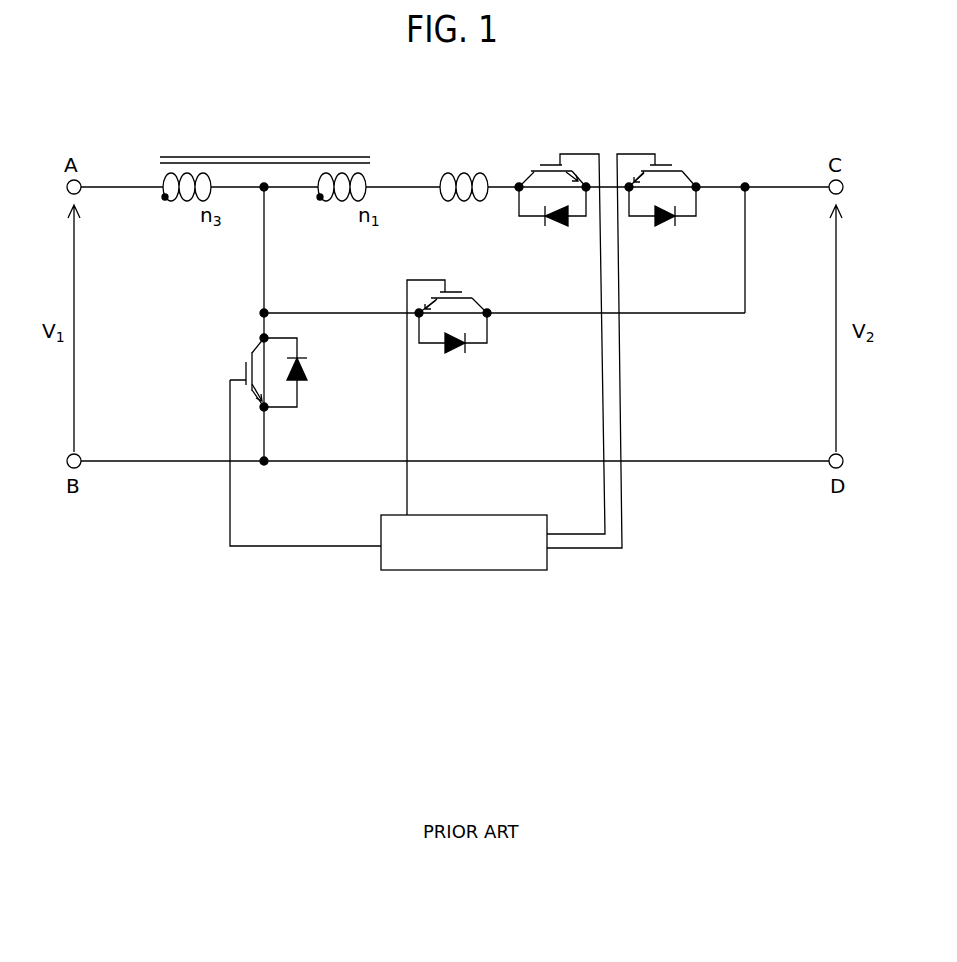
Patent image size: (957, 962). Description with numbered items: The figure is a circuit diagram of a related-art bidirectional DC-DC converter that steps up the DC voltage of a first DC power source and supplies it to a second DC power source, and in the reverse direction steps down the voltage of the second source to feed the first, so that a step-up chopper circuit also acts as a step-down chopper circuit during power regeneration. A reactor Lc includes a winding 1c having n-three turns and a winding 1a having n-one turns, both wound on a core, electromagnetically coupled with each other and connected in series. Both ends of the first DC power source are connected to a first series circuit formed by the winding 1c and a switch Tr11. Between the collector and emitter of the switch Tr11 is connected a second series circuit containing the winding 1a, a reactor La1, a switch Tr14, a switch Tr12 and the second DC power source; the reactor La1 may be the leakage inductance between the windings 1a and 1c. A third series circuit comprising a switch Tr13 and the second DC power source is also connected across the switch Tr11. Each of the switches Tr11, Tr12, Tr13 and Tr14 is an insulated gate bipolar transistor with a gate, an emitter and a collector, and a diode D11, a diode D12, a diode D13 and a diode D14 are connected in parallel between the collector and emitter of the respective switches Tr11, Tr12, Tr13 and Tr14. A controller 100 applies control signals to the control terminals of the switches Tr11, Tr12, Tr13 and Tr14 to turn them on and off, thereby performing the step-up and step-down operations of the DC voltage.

The winding 1a is at (345, 206).
The winding 1c is at (190, 206).
The controller 100 is at (458, 572).
The reactor Lc is at (242, 151).
The reactor La1 is at (464, 171).
The switch Tr11 is at (283, 442).
The switch Tr12 is at (623, 344).
The switch Tr13 is at (449, 393).
The switch Tr14 is at (559, 337).
The diode D11 is at (299, 377).
The diode D12 is at (662, 222).
The diode D13 is at (453, 350).
The diode D14 is at (552, 222).